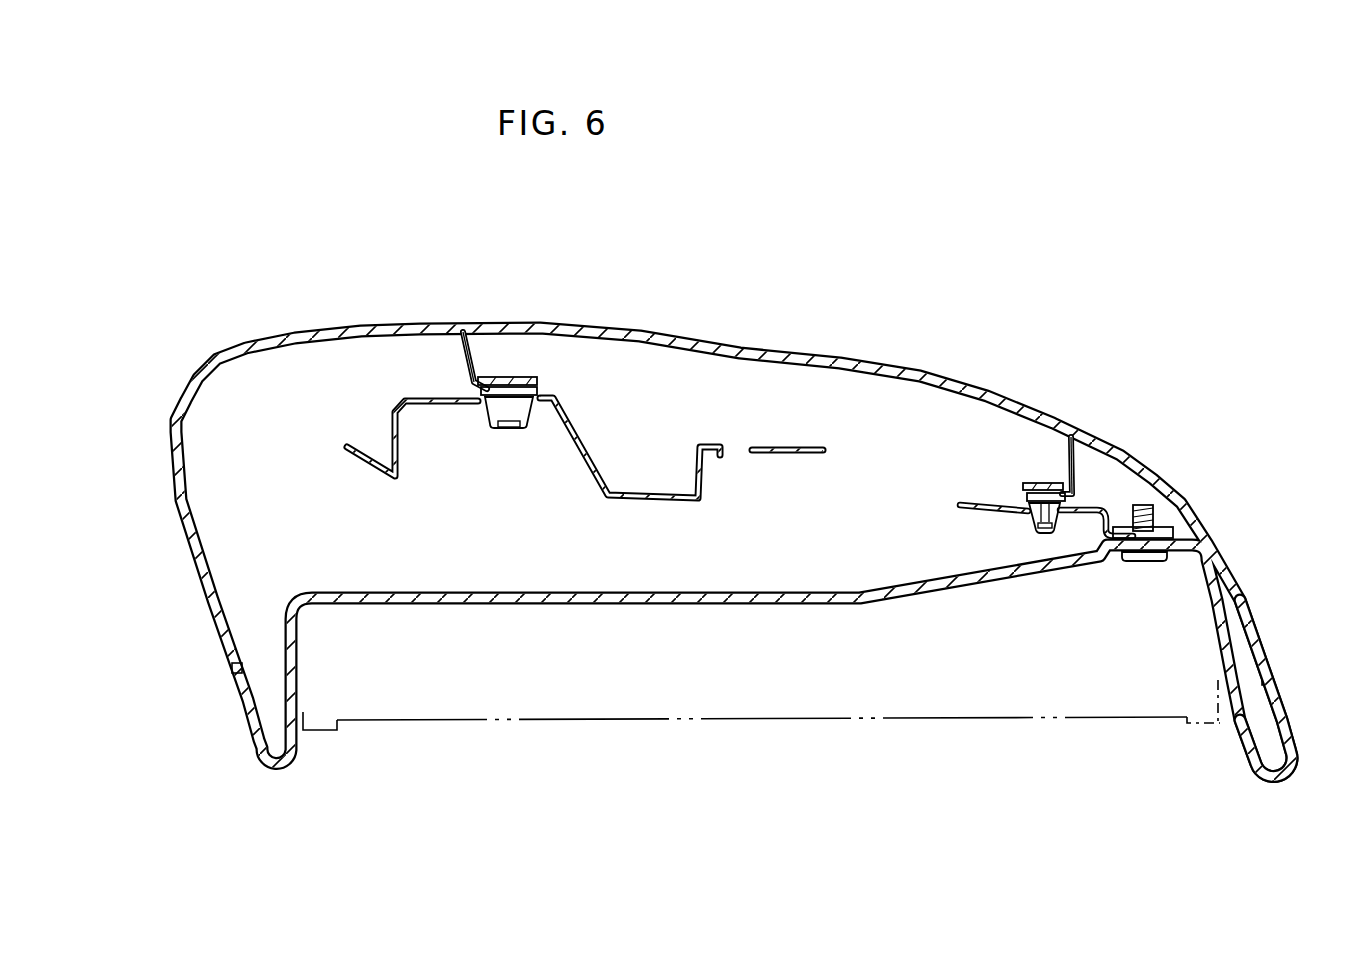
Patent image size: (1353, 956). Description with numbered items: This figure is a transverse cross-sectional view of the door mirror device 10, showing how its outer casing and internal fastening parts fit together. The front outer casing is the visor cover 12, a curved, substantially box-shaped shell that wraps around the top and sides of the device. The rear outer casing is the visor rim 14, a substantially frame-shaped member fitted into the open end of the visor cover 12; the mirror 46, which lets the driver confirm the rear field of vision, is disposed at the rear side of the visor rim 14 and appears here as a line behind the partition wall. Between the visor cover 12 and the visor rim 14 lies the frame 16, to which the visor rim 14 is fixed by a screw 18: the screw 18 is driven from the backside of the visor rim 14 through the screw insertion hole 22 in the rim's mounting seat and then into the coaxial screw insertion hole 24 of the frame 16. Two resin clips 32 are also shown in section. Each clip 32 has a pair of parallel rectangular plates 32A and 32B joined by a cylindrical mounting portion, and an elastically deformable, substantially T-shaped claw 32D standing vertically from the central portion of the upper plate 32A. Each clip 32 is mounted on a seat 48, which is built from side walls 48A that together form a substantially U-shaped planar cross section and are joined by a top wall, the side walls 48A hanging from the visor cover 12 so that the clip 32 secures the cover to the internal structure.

The door mirror device 10 is at (1122, 316).
The visor cover 12 is at (858, 348).
The visor rim 14 is at (1236, 745).
The frame 16 is at (607, 458).
The screw 18 is at (1155, 560).
The screw insertion hole 22 is at (1140, 558).
The screw insertion hole 24 is at (1150, 510).
The resin clip 32 is at (774, 448).
The upper plate 32A is at (543, 398).
The plate 32B is at (513, 376).
The claw 32D is at (495, 406).
The mirror 46 is at (745, 726).
The seat 48 is at (458, 366).
The side walls 48A is at (460, 350).